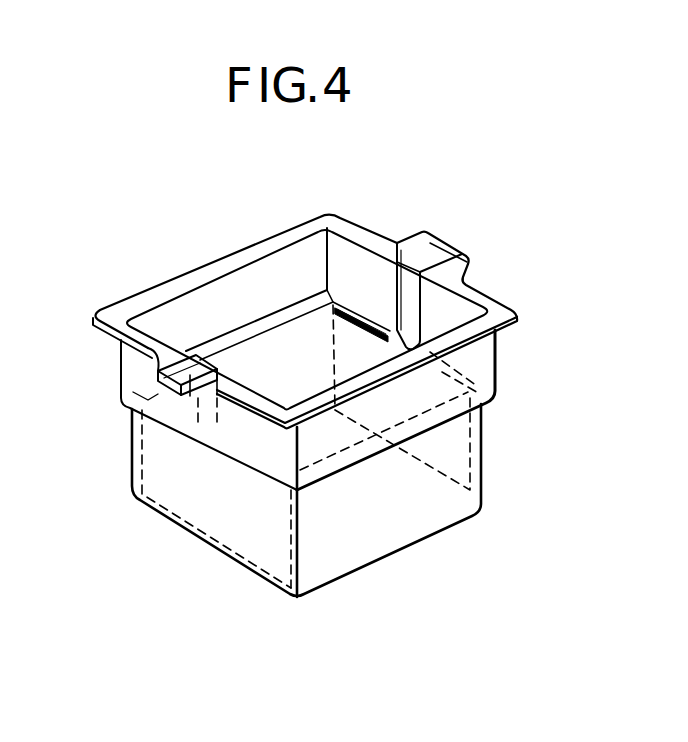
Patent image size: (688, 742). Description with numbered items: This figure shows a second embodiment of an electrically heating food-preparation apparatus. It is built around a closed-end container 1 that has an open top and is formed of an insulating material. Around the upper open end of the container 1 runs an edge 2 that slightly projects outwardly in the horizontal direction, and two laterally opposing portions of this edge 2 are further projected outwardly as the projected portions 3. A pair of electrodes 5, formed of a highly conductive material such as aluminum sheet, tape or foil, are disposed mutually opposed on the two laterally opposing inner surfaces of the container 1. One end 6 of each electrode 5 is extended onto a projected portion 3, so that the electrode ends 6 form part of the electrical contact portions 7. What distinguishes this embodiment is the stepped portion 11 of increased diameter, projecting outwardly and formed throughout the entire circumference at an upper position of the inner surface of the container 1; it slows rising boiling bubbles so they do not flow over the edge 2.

The container 1 is at (496, 357).
The edge 2 is at (228, 258).
The projected portions 3 is at (410, 245).
The electrode 5 is at (335, 338).
The electrode end 6 is at (443, 248).
The electrical contact portion 7 is at (473, 248).
The stepped portion 11 is at (353, 307).